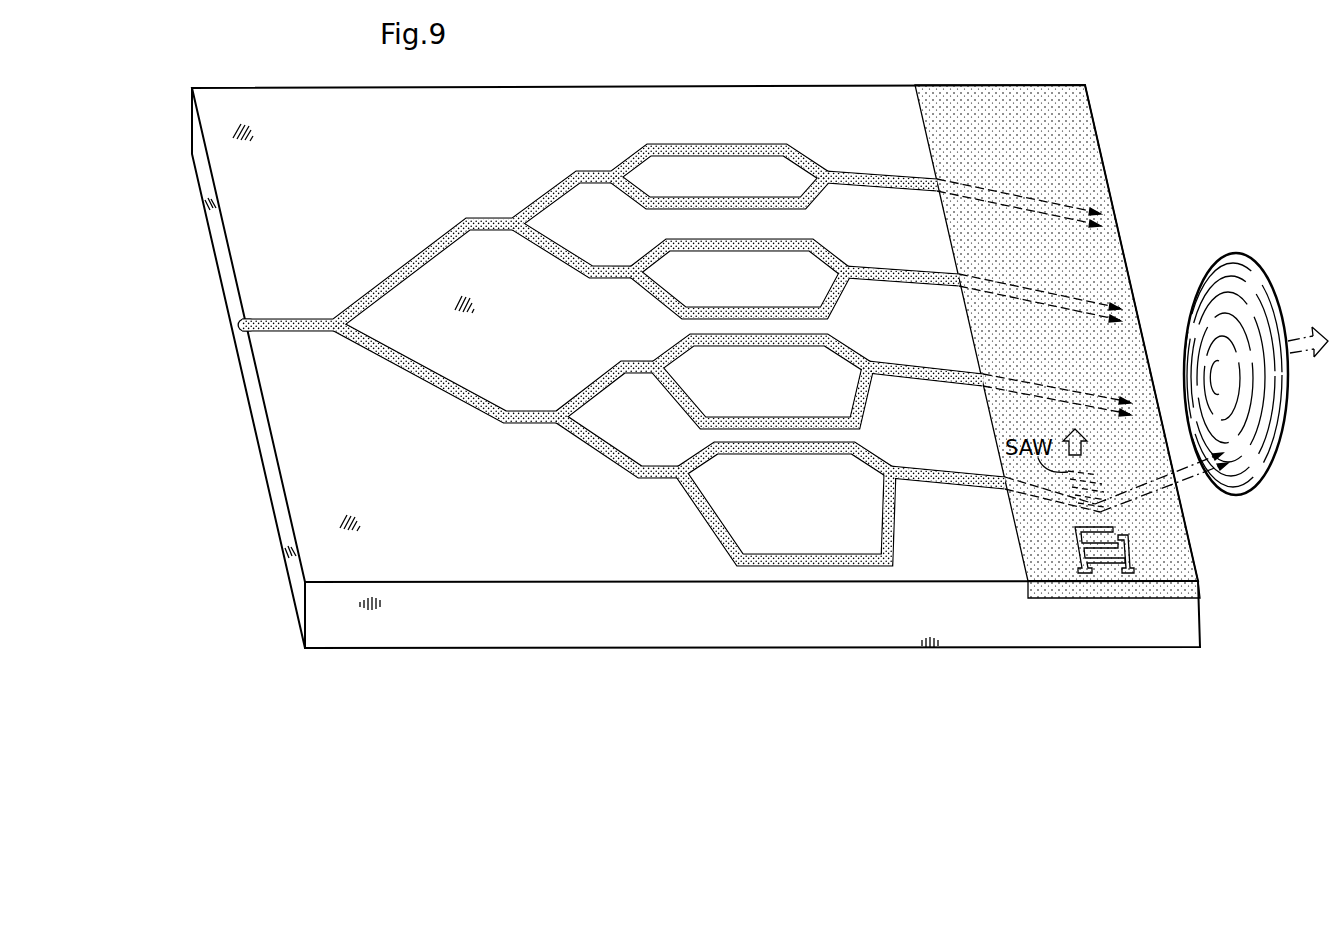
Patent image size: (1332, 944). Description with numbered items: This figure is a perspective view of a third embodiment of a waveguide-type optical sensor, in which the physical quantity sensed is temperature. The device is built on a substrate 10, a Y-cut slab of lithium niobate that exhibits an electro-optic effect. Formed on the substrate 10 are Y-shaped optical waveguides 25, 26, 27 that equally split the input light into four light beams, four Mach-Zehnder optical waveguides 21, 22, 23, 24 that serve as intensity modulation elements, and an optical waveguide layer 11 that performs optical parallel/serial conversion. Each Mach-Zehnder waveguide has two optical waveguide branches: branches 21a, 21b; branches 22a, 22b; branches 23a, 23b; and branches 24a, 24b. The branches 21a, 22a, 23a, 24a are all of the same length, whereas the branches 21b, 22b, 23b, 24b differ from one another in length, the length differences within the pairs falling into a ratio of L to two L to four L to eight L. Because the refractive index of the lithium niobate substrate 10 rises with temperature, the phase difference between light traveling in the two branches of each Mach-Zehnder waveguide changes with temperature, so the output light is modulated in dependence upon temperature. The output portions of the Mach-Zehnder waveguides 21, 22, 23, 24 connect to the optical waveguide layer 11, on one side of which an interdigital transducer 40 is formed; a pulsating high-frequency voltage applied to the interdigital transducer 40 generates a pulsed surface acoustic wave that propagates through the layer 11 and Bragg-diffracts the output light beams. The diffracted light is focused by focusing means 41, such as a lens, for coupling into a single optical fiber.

The substrate 10 is at (1190, 638).
The optical waveguide layer 11 is at (1200, 598).
The Mach-Zehnder optical waveguide 21 is at (848, 166).
The optical waveguide branch 21a is at (762, 145).
The optical waveguide branch 21b is at (748, 198).
The Mach-Zehnder optical waveguide 22 is at (866, 267).
The optical waveguide branch 22a is at (752, 241).
The optical waveguide branch 22b is at (763, 306).
The Mach-Zehnder optical waveguide 23 is at (885, 364).
The optical waveguide branch 23a is at (780, 347).
The optical waveguide branch 23b is at (783, 421).
The Mach-Zehnder optical waveguide 24 is at (944, 488).
The optical waveguide branch 24a is at (808, 455).
The optical waveguide branch 24b is at (812, 556).
The Y-shaped optical waveguide 25 is at (333, 334).
The Y-shaped optical waveguide 26 is at (512, 218).
The Y-shaped optical waveguide 27 is at (552, 429).
The interdigital transducer 40 is at (1135, 553).
The focusing means 41 is at (1262, 476).